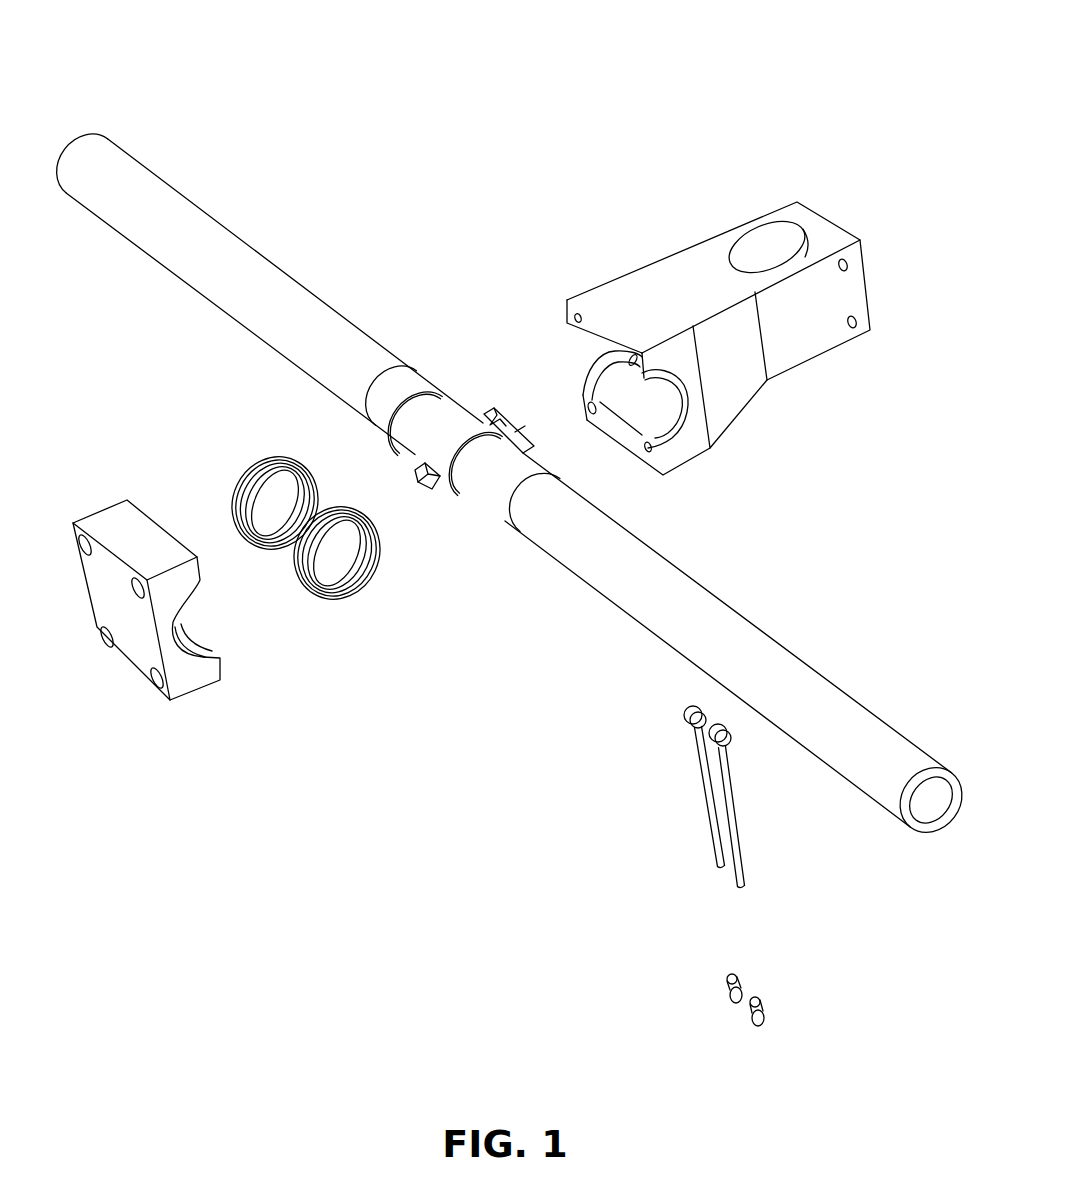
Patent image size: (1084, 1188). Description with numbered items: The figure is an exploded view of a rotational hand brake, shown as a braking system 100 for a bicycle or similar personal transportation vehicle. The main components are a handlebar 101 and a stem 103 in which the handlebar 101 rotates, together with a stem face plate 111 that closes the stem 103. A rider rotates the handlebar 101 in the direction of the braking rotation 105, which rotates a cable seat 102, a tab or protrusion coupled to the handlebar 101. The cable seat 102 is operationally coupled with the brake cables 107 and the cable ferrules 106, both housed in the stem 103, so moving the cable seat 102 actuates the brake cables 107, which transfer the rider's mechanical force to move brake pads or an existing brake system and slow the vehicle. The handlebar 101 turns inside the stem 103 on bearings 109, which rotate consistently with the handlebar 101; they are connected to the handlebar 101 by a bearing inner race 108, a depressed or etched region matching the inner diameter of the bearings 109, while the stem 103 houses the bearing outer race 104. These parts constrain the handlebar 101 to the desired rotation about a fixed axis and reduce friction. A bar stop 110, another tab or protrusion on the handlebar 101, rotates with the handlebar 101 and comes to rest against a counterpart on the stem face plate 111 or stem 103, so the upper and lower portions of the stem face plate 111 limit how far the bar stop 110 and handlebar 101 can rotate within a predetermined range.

The braking system 100 is at (797, 76).
The handlebar 101 is at (840, 690).
The cable seat 102 is at (507, 420).
The stem 103 is at (763, 311).
The bearing outer race 104 is at (675, 438).
The braking rotation 105 is at (48, 163).
The cable ferrules 106 is at (762, 1008).
The brake cables 107 is at (728, 837).
The bearing inner race 108 is at (490, 457).
The bearings 109 is at (307, 570).
The bar stop 110 is at (414, 468).
The stem face plate 111 is at (178, 700).